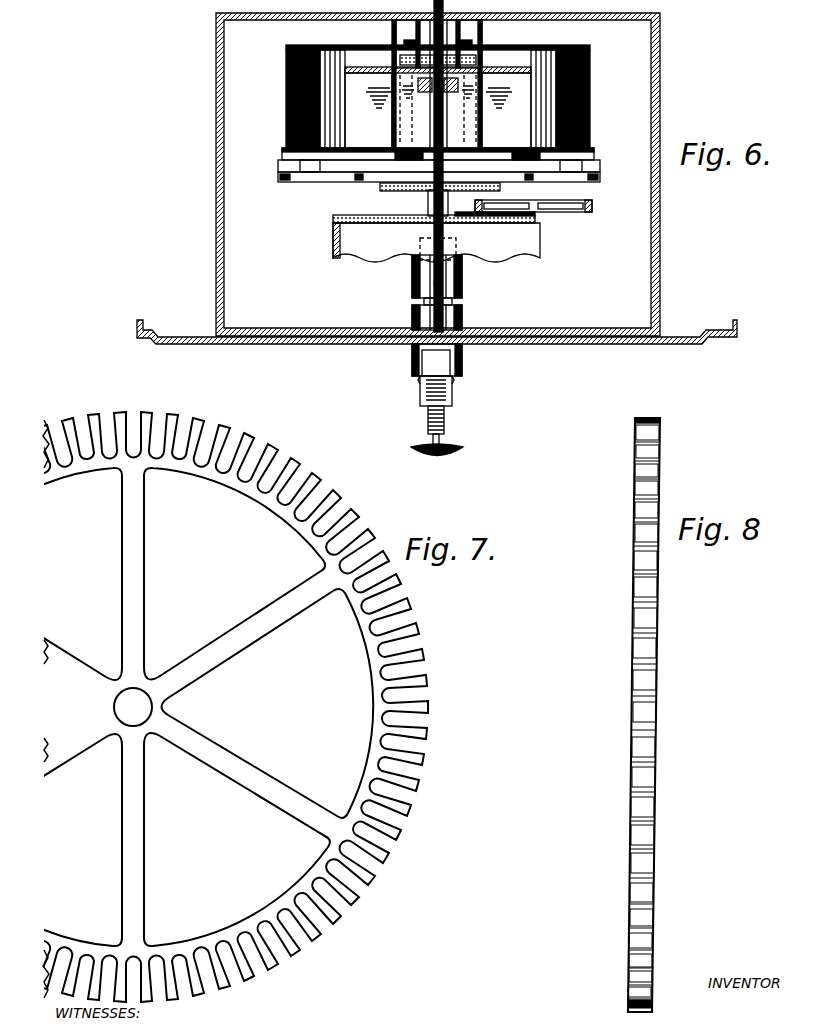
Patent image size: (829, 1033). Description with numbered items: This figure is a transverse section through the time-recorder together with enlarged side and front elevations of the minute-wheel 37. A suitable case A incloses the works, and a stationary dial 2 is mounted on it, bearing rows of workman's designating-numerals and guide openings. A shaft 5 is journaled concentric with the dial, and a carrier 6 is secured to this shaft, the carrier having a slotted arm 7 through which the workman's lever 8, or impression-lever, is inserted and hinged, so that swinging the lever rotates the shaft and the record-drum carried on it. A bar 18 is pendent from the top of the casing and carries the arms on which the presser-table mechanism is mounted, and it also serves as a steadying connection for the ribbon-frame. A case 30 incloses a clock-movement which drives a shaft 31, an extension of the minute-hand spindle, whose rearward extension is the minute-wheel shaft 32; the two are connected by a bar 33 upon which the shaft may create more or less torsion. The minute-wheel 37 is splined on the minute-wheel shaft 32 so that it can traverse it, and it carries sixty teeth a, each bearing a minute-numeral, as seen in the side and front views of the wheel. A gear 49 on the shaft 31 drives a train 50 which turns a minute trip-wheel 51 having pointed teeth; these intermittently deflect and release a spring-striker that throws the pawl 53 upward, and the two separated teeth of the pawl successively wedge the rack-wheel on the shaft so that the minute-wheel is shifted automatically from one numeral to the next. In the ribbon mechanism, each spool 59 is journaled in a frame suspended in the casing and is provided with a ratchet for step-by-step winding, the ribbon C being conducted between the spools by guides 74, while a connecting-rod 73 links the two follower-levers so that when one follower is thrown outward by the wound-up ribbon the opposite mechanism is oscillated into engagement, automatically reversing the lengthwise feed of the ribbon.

In FIG. 6, the case A is at (449, 174).
In FIG. 6, the stationary dial 2 is at (437, 348).
In FIG. 6, the shaft 5 is at (470, 55).
In FIG. 6, the carrier 6 is at (450, 364).
In FIG. 6, the slotted arm 7 is at (444, 397).
In FIG. 6, the workman's lever 8 is at (438, 431).
In FIG. 6, the bar 18 is at (449, 179).
In FIG. 6, the case 30 is at (451, 244).
In FIG. 6, the shaft 31 is at (452, 262).
In FIG. 6, the minute-wheel shaft 32 is at (443, 20).
In FIG. 6, the bar 33 is at (428, 203).
In FIG. 6, the minute-wheel 37 is at (460, 110).
In FIG. 7, the minute-wheel 37 is at (214, 707).
In FIG. 8, the minute-wheel 37 is at (660, 715).
In FIG. 6, the gear 49 is at (434, 219).
In FIG. 6, the train 50 is at (525, 222).
In FIG. 6, the minute trip-wheel 51 is at (546, 212).
In FIG. 6, the pawl 53 is at (425, 190).
In FIG. 6, the spool 59 is at (435, 96).
In FIG. 6, the connecting-rod 73 is at (326, 168).
In FIG. 6, the guides 74 is at (439, 111).
In FIG. 6, the ribbon C is at (438, 110).
In FIG. 7, the teeth a is at (346, 795).
In FIG. 8, the teeth a is at (657, 681).